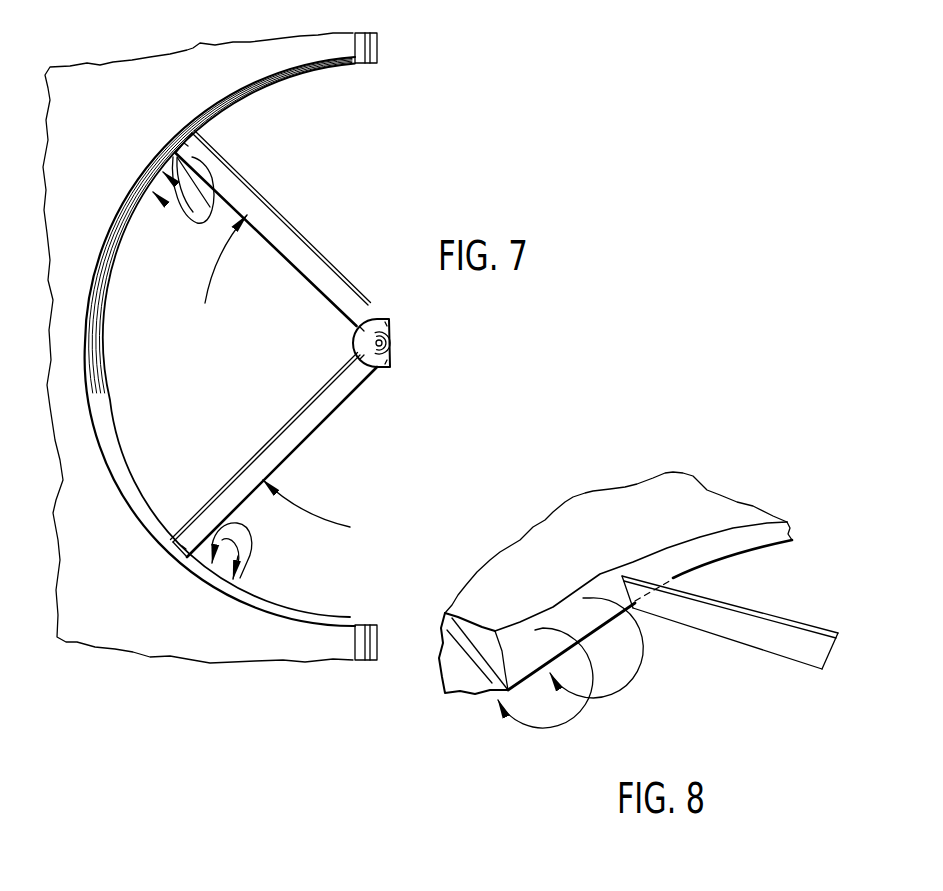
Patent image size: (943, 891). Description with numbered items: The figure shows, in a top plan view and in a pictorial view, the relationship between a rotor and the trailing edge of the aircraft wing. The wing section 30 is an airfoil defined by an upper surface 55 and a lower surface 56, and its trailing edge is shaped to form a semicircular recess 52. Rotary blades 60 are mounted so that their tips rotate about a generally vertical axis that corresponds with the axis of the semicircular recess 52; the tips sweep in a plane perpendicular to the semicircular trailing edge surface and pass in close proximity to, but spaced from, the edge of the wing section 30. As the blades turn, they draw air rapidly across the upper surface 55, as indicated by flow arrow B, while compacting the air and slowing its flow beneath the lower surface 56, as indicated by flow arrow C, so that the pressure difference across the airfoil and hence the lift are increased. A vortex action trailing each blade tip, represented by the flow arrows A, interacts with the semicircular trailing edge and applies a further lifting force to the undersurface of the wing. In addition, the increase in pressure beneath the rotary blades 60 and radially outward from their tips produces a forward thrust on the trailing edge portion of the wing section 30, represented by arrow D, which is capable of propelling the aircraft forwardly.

In FIG. 7, the wing section 30 is at (62, 634).
In FIG. 8, the wing section 30 is at (560, 524).
In FIG. 7, the semicircular recess 52 is at (97, 388).
In FIG. 8, the semicircular recess 52 is at (665, 568).
In FIG. 7, the upper surface 55 is at (78, 243).
In FIG. 8, the upper surface 55 is at (757, 517).
In FIG. 8, the lower surface 56 is at (457, 714).
In FIG. 7, the rotary blades 60 is at (302, 241).
In FIG. 8, the rotary blades 60 is at (788, 655).
In FIG. 7, the flow arrow A is at (201, 227).
In FIG. 8, the flow arrow A is at (635, 680).
In FIG. 7, the flow arrow B is at (297, 50).
In FIG. 8, the flow arrow B is at (733, 510).
In FIG. 8, the flow arrow C is at (433, 690).
In FIG. 7, the thrust arrow D is at (20, 352).
In FIG. 8, the thrust arrow D is at (745, 558).